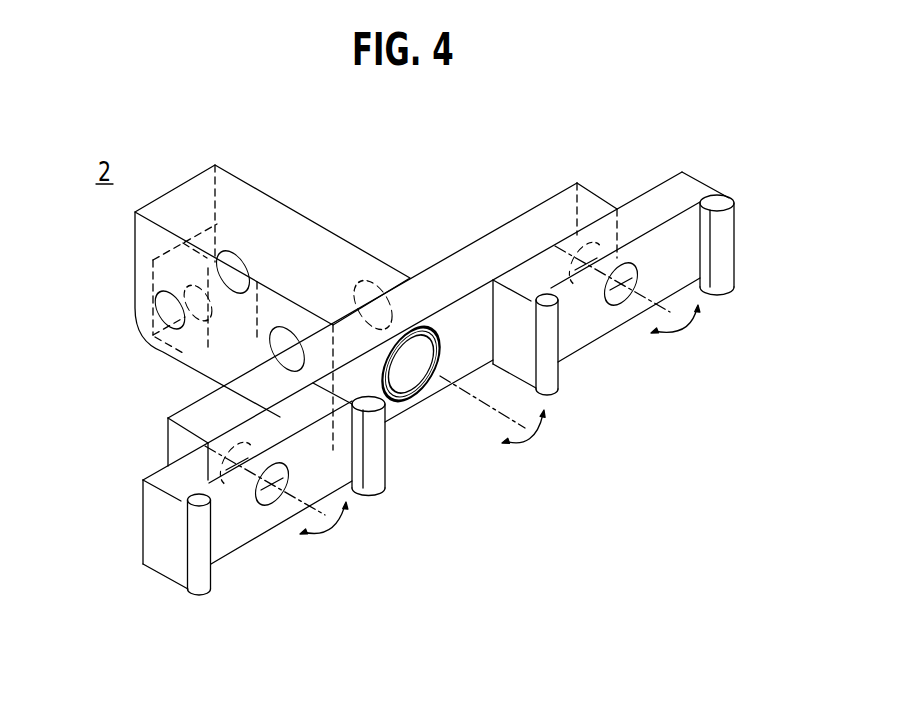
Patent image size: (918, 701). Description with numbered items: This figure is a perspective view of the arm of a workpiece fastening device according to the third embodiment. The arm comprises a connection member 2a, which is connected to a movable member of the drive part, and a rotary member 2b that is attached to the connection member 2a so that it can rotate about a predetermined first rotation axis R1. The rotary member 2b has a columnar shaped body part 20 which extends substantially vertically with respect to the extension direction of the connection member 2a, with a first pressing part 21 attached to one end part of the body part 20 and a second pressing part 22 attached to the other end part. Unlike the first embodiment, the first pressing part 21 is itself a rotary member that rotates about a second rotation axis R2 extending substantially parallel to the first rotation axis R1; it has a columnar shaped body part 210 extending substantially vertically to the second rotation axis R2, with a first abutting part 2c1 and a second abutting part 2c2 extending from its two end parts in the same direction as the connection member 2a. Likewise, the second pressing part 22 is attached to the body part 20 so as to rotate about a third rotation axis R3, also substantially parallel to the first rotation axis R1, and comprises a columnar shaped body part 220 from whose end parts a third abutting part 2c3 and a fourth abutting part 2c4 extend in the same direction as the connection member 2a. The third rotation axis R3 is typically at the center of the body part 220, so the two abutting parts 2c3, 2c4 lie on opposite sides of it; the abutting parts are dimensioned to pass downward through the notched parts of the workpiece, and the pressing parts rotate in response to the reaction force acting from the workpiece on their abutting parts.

The connection member 2a is at (286, 236).
The rotary member 2b is at (452, 248).
The body part 20 is at (395, 408).
The first pressing part 21 is at (649, 282).
The second pressing part 22 is at (274, 505).
The body part 210 is at (620, 316).
The body part 220 is at (227, 535).
The first abutting part 2c1 is at (725, 282).
The second abutting part 2c2 is at (553, 382).
The third abutting part 2c3 is at (377, 494).
The fourth abutting part 2c4 is at (192, 568).
The first rotation axis R1 is at (477, 404).
The second rotation axis R2 is at (707, 300).
The third rotation axis R3 is at (282, 503).